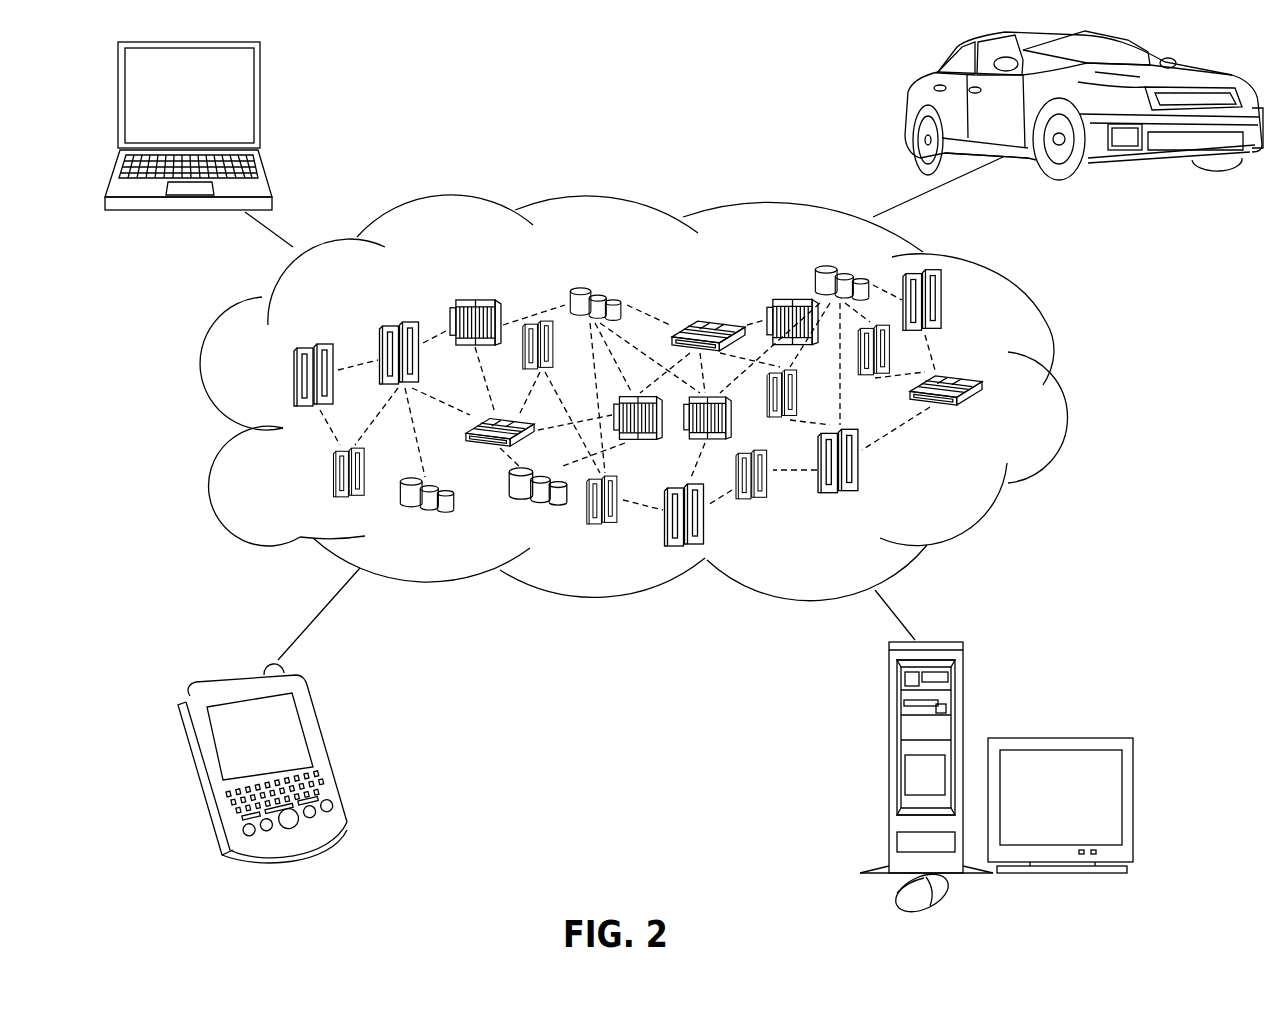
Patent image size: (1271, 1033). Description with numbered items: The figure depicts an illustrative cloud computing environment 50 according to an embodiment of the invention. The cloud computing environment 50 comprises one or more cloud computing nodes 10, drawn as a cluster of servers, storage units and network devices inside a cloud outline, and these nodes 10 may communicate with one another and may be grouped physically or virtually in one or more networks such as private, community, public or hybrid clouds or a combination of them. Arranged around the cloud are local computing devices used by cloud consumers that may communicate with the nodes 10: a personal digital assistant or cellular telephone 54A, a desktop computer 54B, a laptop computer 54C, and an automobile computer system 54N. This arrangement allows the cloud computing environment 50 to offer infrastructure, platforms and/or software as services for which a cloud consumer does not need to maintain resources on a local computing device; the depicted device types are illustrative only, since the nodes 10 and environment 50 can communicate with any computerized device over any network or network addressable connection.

The cloud computing environment 50 is at (1058, 392).
The cloud computing nodes 10 is at (972, 496).
The personal digital assistant (PDA) or cellular telephone 54A is at (315, 720).
The desktop computer 54B is at (889, 700).
The laptop computer 54C is at (262, 80).
The automobile computer system 54N is at (907, 97).